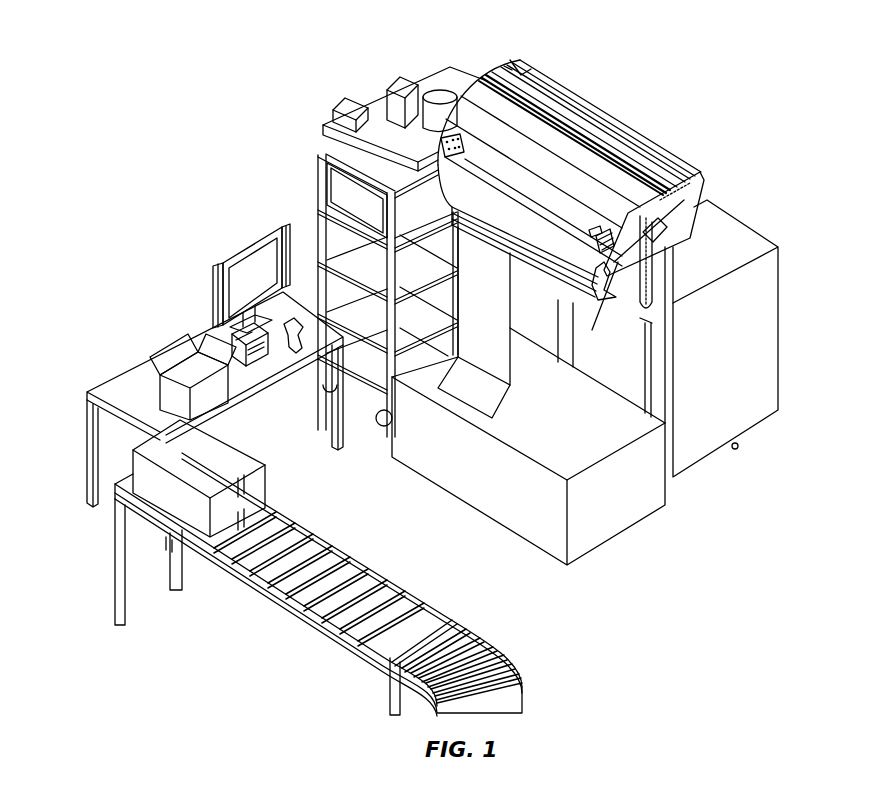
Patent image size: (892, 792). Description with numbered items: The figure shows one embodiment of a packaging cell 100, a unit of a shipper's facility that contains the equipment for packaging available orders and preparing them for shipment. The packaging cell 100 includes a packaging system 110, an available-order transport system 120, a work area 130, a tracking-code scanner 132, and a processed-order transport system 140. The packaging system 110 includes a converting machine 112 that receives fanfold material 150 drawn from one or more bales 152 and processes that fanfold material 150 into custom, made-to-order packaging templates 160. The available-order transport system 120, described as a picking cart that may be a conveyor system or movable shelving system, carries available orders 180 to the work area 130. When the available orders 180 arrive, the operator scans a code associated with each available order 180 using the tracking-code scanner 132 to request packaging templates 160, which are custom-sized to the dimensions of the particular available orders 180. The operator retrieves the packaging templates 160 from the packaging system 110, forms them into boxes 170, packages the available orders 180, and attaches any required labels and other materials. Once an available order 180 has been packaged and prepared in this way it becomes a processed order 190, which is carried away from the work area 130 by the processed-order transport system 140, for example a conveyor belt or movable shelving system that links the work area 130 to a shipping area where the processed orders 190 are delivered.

The packaging cell 100 is at (190, 152).
The packaging system 110 is at (620, 108).
The converting machine 112 is at (700, 178).
The available-order transport system 120 is at (470, 56).
The work area 130 is at (168, 318).
The tracking-code scanner 132 is at (297, 313).
The processed-order transport system 140 is at (290, 618).
The fanfold material 150 is at (660, 304).
The bale 152 is at (770, 348).
The packaging template 160 is at (498, 352).
The box 170 is at (158, 390).
The available order 180 is at (345, 100).
The processed order 190 is at (162, 485).